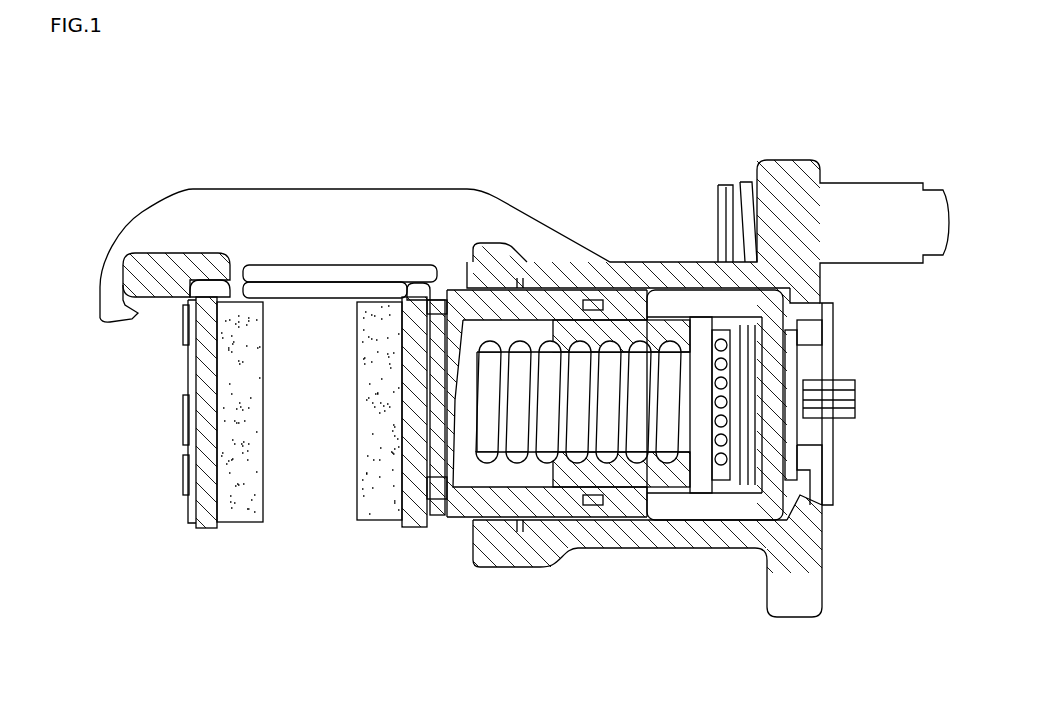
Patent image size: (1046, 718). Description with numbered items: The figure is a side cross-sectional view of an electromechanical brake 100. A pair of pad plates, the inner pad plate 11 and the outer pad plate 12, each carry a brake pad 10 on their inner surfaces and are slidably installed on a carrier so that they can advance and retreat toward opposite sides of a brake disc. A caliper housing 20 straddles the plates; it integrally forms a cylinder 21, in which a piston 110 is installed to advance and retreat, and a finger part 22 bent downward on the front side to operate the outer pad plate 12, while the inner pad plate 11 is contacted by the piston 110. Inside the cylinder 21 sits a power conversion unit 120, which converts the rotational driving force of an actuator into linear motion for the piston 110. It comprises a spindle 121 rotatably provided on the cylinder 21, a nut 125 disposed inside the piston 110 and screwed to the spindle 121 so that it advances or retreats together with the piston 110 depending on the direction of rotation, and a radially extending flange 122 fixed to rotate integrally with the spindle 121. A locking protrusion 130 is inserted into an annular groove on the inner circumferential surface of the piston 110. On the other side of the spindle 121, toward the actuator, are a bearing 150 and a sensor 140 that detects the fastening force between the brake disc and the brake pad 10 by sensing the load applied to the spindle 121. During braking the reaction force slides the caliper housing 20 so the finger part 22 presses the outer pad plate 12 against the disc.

The brake pad 10 is at (247, 522).
The inner pad plate 11 is at (418, 527).
The outer pad plate 12 is at (206, 526).
The caliper housing 20 is at (468, 190).
The cylinder 21 is at (696, 272).
The finger part 22 is at (152, 427).
The electromechanical brake 100 is at (712, 91).
The piston 110 is at (548, 290).
The power conversion unit 120 is at (523, 359).
The spindle 121 is at (582, 437).
The flange 122 is at (690, 462).
The nut 125 is at (636, 495).
The locking protrusion 130 is at (597, 302).
The sensor 140 is at (822, 513).
The bearing 150 is at (735, 493).